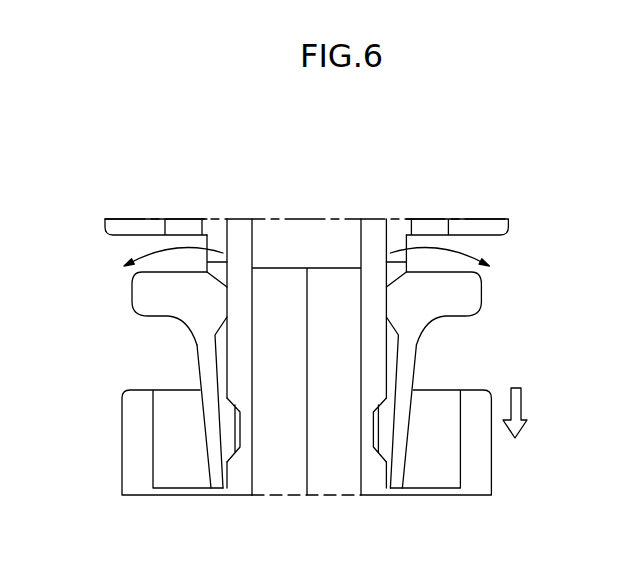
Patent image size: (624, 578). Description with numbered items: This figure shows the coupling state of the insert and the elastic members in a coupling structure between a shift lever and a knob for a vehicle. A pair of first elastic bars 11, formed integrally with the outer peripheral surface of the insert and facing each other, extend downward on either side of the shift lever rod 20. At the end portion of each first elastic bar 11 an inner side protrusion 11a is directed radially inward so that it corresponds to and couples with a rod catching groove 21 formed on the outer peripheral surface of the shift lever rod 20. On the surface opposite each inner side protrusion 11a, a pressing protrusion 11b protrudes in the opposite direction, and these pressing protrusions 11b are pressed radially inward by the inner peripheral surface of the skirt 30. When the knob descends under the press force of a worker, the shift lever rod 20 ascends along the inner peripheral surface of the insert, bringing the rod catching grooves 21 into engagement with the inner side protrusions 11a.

The first elastic bar 11 is at (212, 410).
The inner side protrusion 11a is at (216, 303).
The pressing protrusion 11b is at (147, 302).
The shift lever rod 20 is at (367, 327).
The rod catching groove 21 is at (240, 428).
The skirt 30 is at (475, 402).